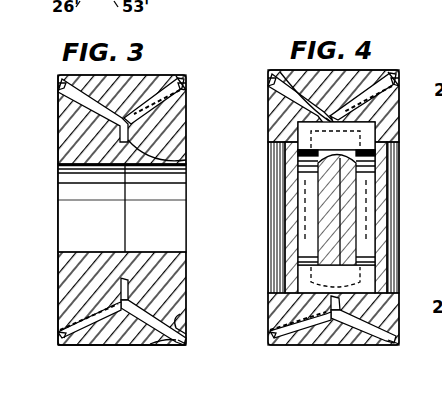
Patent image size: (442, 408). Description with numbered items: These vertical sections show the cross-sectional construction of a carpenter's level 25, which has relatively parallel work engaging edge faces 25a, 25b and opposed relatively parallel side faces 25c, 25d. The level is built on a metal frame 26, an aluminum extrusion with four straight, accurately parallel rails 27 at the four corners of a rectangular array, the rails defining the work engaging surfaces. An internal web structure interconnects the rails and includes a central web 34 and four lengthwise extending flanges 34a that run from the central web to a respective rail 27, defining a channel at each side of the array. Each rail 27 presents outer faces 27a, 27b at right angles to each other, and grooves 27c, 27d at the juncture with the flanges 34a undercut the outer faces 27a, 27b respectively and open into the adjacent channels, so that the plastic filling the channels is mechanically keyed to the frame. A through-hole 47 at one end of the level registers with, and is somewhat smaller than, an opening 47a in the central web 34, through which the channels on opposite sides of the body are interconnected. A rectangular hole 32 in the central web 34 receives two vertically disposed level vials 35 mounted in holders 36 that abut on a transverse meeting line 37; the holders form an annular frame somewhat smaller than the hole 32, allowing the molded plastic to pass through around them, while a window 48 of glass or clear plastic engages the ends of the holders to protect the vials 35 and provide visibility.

In FIG. 3, the carpenter's level 25 is at (160, 72).
In FIG. 4, the carpenter's level 25 is at (378, 62).
In FIG. 3, the work engaging edge face 25a is at (86, 76).
In FIG. 4, the work engaging edge face 25a is at (378, 70).
In FIG. 3, the work engaging edge face 25b is at (86, 346).
In FIG. 4, the work engaging edge face 25b is at (300, 346).
In FIG. 3, the side face 25c is at (56, 138).
In FIG. 4, the side face 25c is at (270, 120).
In FIG. 3, the side face 25d is at (188, 260).
In FIG. 3, the metal frame 26 is at (186, 84).
In FIG. 4, the metal frame 26 is at (399, 80).
In FIG. 3, the rail 27 is at (176, 346).
In FIG. 4, the rail 27 is at (396, 346).
In FIG. 3, the outer face 27a is at (186, 342).
In FIG. 3, the outer face 27b is at (182, 346).
In FIG. 3, the groove 27c is at (186, 318).
In FIG. 3, the groove 27d is at (140, 344).
In FIG. 4, the rectangular hole 32 is at (300, 70).
In FIG. 3, the central web 34 is at (160, 125).
In FIG. 4, the central web 34 is at (372, 104).
In FIG. 3, the flange 34a is at (150, 106).
In FIG. 4, the level vial 35 is at (352, 178).
In FIG. 4, the holder 36 is at (375, 142).
In FIG. 4, the transverse meeting line 37 is at (375, 234).
In FIG. 3, the through-hole 47 is at (176, 221).
In FIG. 3, the opening 47a is at (184, 154).
In FIG. 4, the window 48 is at (375, 205).